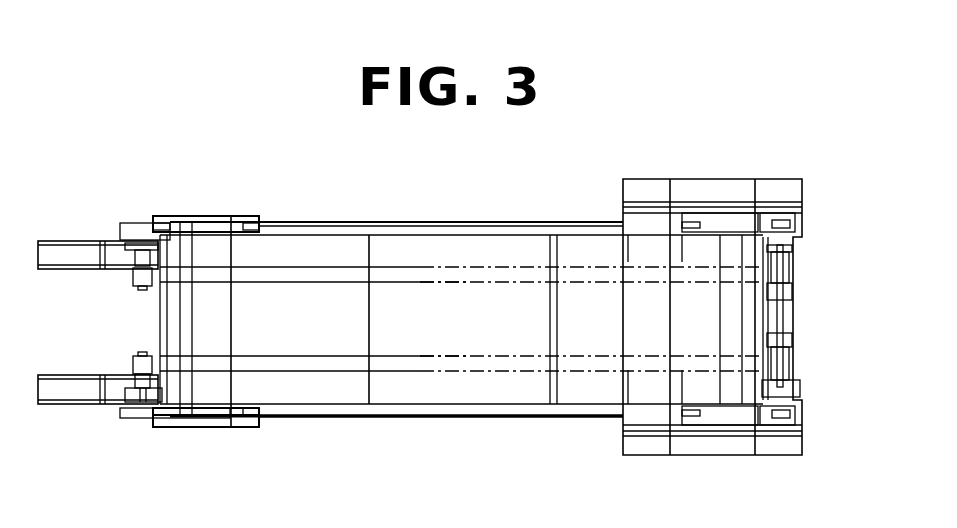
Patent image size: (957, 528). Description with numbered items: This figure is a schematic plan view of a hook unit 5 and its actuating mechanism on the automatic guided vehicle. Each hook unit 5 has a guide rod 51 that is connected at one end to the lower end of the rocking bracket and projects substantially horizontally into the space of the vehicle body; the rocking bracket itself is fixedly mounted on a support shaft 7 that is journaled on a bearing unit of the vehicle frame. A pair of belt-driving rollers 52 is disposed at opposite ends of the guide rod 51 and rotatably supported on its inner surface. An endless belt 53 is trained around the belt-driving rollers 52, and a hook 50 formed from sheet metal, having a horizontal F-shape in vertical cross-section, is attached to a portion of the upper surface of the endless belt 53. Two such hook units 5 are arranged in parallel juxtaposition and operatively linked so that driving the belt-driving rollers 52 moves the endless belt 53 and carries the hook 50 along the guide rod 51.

The hook unit 5 is at (413, 215).
The support shaft 7 is at (737, 316).
The hook 50 is at (70, 255).
The guide rod 51 is at (500, 222).
The belt-driving rollers 52 is at (793, 290).
The endless belt 53 is at (445, 283).